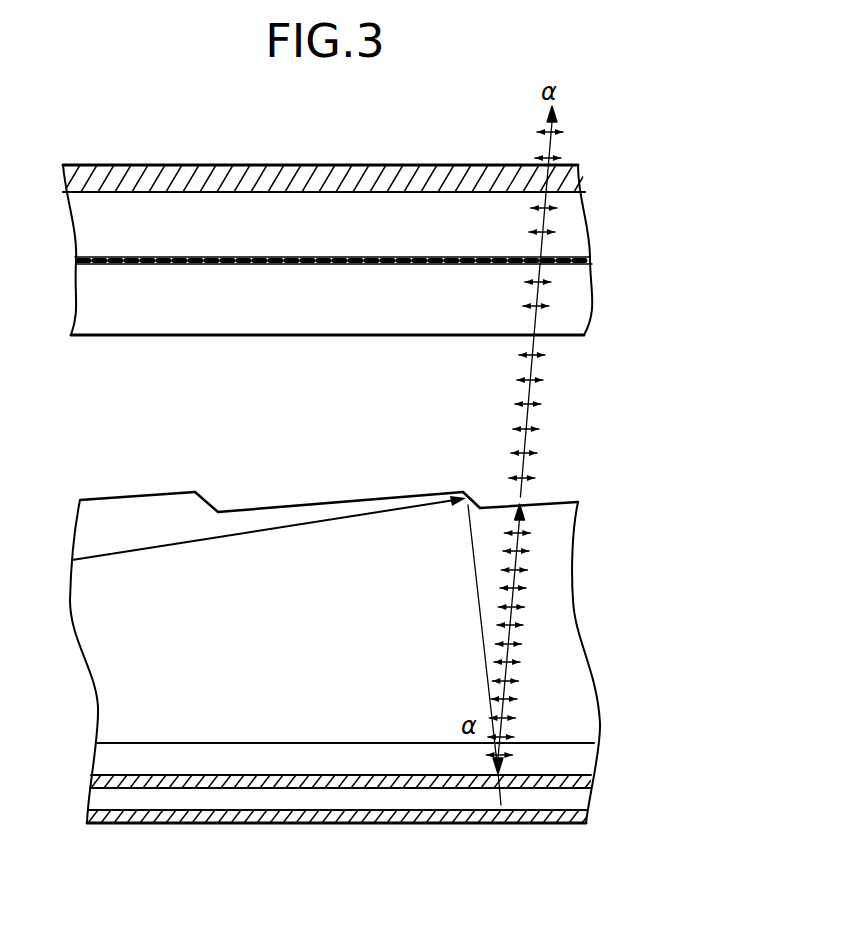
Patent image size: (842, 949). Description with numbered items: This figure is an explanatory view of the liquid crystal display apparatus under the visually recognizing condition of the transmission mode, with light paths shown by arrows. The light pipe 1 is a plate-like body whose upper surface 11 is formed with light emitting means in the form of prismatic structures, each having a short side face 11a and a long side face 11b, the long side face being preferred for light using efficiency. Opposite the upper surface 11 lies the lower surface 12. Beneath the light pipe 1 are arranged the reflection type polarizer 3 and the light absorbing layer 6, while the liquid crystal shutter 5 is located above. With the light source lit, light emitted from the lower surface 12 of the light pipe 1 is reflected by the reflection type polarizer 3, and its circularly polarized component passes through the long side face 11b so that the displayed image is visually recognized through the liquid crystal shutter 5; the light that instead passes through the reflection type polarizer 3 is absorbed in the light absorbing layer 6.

The light pipe 1 is at (556, 650).
The reflection type polarizer 3 is at (590, 779).
The liquid crystal shutter 5 is at (598, 162).
The light absorbing layer 6 is at (590, 813).
The upper surface 11 is at (154, 488).
The short side face 11a is at (207, 500).
The long side face 11b is at (303, 503).
The lower surface 12 is at (368, 746).